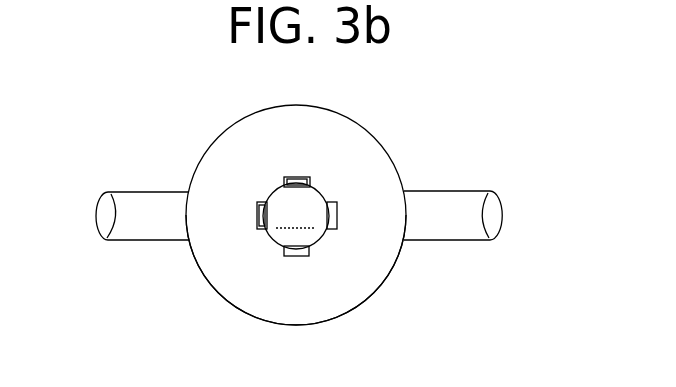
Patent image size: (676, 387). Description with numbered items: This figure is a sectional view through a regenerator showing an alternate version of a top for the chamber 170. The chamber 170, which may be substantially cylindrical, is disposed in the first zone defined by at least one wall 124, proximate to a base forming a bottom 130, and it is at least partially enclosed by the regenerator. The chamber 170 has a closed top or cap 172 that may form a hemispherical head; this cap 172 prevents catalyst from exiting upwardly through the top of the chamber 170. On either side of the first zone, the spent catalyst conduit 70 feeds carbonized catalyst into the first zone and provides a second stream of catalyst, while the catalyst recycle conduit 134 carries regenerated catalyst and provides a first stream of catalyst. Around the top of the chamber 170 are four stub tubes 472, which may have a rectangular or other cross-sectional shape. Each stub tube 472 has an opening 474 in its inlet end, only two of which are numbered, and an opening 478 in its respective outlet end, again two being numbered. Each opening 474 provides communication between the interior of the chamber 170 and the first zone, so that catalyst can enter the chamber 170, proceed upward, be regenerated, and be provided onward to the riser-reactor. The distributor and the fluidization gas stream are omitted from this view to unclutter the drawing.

The bottom 130 is at (240, 150).
The wall 124 is at (235, 307).
The catalyst recycle conduit 134 is at (132, 205).
The spent catalyst conduit 70 is at (468, 190).
The chamber 170 is at (322, 192).
The cap 172 is at (296, 213).
The stub tube 472 is at (310, 185).
The opening 478 is at (294, 176).
The opening 474 is at (340, 220).